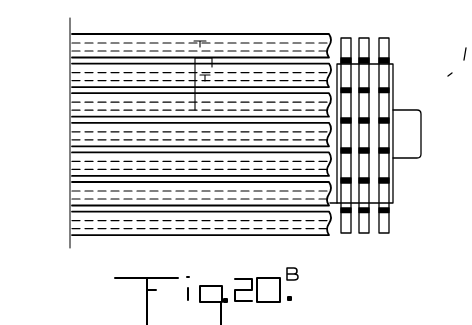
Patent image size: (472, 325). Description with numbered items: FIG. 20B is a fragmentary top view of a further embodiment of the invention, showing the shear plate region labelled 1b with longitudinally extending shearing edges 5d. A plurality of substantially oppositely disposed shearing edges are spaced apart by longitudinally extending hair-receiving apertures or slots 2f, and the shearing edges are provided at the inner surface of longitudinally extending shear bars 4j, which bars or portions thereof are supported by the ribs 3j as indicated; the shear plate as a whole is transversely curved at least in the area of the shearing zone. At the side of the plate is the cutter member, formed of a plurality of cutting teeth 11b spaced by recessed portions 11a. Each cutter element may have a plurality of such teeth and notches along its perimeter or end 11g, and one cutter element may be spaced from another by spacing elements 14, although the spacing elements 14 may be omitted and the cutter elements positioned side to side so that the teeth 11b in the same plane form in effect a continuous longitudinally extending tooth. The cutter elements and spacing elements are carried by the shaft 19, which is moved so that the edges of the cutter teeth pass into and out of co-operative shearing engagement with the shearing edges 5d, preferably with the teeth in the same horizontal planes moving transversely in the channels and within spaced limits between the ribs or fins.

The cable 1b is at (259, 36).
The hair-receiving apertures or slots 2f is at (70, 118).
The shearing edges 5d is at (70, 180).
The shear bars 4j is at (172, 130).
The ribs 3j is at (208, 36).
The perimeter or end 11g is at (361, 52).
The cutting teeth 11b is at (383, 50).
The recessed portions 11a is at (383, 188).
The spacing elements 14 is at (375, 80).
The shaft 19 is at (421, 142).